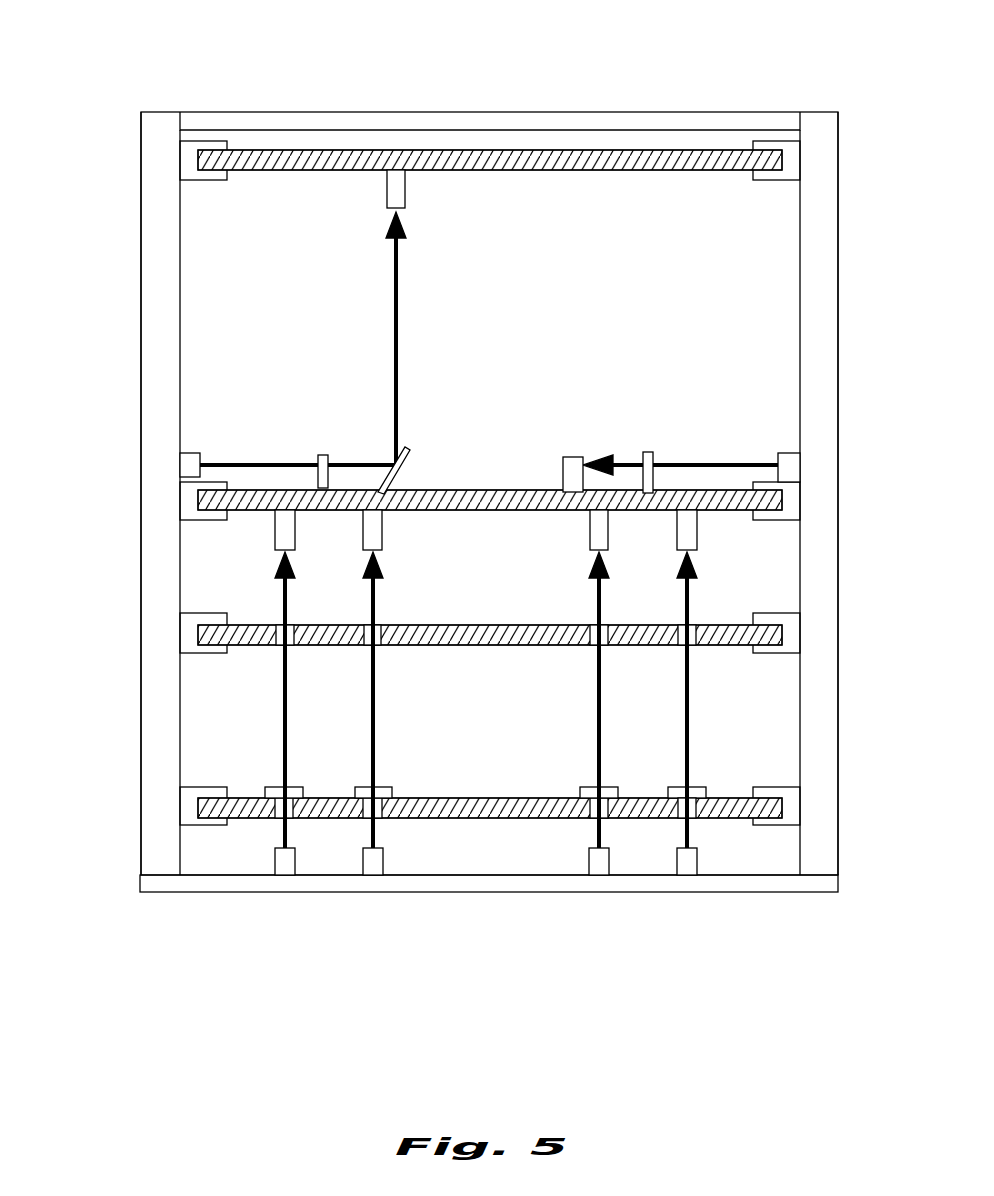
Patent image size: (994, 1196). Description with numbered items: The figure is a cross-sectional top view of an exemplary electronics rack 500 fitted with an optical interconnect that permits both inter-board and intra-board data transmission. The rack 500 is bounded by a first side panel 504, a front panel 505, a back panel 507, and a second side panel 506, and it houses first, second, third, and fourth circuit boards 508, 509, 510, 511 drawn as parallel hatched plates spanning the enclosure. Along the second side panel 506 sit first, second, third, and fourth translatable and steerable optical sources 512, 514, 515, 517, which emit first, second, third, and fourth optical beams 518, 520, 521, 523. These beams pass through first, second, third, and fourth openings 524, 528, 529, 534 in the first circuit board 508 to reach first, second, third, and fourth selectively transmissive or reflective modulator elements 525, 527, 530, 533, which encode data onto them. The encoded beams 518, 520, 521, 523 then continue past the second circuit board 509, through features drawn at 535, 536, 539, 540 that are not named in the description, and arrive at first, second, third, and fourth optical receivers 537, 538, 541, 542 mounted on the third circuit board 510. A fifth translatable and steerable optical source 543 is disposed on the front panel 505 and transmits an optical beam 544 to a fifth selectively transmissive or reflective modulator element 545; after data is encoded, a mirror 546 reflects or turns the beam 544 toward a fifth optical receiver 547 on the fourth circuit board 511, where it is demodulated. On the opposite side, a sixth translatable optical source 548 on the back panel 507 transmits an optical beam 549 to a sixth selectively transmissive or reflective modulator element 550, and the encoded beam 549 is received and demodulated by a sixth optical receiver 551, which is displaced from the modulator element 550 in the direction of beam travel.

The electronics rack 500 is at (110, 100).
The first side panel 504 is at (455, 112).
The front panel 505 is at (157, 550).
The second side panel 506 is at (480, 880).
The back panel 507 is at (820, 563).
The first circuit board 508 is at (483, 800).
The second circuit board 509 is at (483, 628).
The third circuit board 510 is at (483, 500).
The fourth circuit board 511 is at (556, 160).
The first translatable and steerable optical source 512 is at (288, 862).
The second translatable and steerable optical source 514 is at (378, 865).
The third translatable and steerable optical source 515 is at (598, 862).
The fourth translatable and steerable optical source 517 is at (688, 862).
The first optical beam 518 is at (285, 835).
The second optical beam 520 is at (378, 828).
The third optical beam 521 is at (598, 835).
The fourth optical beam 523 is at (688, 835).
The first opening 524 is at (285, 810).
The first selectively transmissive or reflective modulator element 525 is at (282, 795).
The second selectively transmissive or reflective modulator element 527 is at (376, 797).
The second opening 528 is at (382, 810).
The third opening 529 is at (598, 810).
The third selectively transmissive or reflective modulator element 530 is at (598, 797).
The fourth selectively transmissive or reflective modulator element 533 is at (690, 797).
The fourth opening 534 is at (688, 810).
The first aperture 535 is at (278, 640).
The second aperture 536 is at (377, 632).
The first optical receiver 537 is at (275, 537).
The second optical receiver 538 is at (383, 537).
The third aperture 539 is at (600, 638).
The fourth aperture 540 is at (690, 632).
The third optical receiver 541 is at (590, 541).
The fourth optical receiver 542 is at (688, 540).
The fifth translatable and steerable optical source 543 is at (200, 458).
The optical beam 544 is at (248, 465).
The fifth selectively transmissive or reflective modulator element 545 is at (328, 458).
The mirror 546 is at (412, 452).
The fifth optical receiver 547 is at (392, 203).
The sixth translatable optical source 548 is at (788, 460).
The optical beam 549 is at (697, 462).
The sixth selectively transmissive or reflective modulator element 550 is at (648, 458).
The sixth optical receiver 551 is at (572, 470).